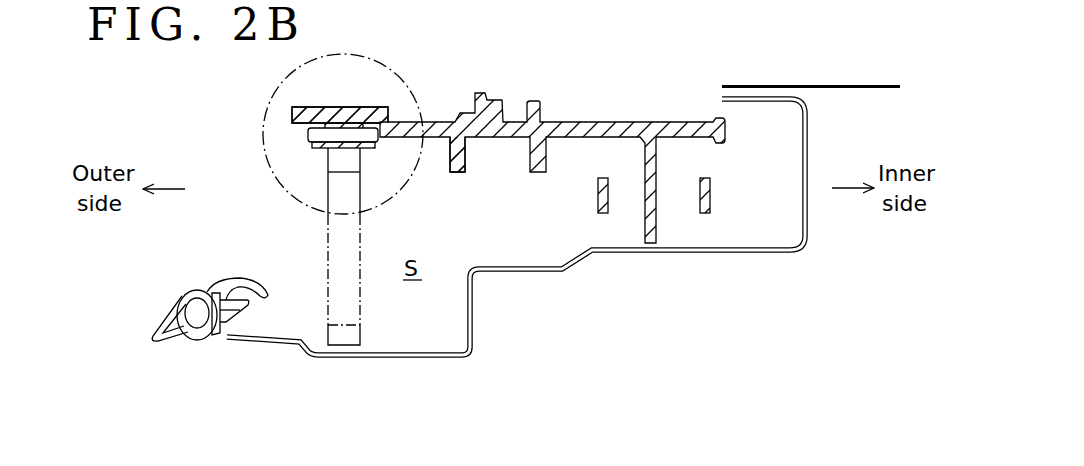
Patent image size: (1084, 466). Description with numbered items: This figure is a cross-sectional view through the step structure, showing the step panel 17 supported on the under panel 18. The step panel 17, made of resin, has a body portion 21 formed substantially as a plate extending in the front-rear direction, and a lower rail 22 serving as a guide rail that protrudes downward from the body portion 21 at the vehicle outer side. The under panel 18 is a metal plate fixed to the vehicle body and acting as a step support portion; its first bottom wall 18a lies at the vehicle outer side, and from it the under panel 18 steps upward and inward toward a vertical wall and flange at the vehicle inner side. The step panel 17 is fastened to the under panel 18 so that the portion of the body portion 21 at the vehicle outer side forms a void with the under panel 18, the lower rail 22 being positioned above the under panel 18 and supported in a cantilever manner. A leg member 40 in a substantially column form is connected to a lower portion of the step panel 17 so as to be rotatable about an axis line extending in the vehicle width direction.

The step panel 17 is at (613, 120).
The under panel 18 is at (807, 142).
The first bottom wall 18a is at (407, 358).
The body portion 21 is at (440, 122).
The lower rail 22 is at (468, 163).
The leg member 40 is at (326, 156).